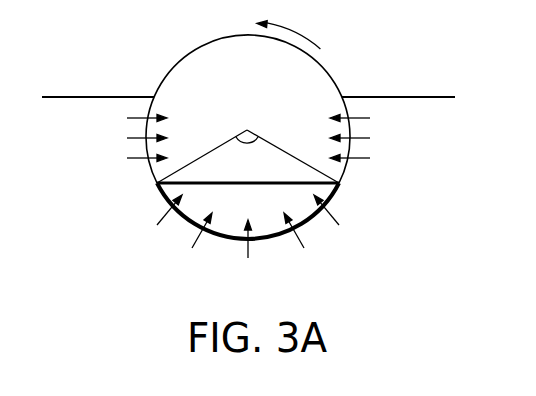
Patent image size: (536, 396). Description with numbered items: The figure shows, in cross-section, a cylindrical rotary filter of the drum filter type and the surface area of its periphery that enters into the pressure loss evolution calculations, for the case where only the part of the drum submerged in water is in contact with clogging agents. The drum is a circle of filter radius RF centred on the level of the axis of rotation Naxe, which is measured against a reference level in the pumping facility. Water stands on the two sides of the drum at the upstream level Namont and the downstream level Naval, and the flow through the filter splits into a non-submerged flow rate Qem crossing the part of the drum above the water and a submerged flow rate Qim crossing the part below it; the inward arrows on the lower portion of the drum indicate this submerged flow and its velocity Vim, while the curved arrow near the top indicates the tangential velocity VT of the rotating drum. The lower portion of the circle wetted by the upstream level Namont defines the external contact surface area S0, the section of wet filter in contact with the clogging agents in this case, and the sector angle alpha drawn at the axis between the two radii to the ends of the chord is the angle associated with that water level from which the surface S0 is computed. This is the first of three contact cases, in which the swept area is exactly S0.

The section of wet filter by N_amont S0 is at (337, 189).
The level of the axis of rotation of the filter Naxe is at (282, 140).
The filter radius RF is at (202, 152).
The sector angle associated with a level N alpha is at (247, 153).
The upstream level Namont is at (94, 77).
The downstream level Naval is at (398, 149).
The flow rate, non-submerged Qem is at (220, 138).
The flow rate, submerged Qim is at (248, 244).
The immersion velocity Vim is at (269, 248).
The tangential velocity VT is at (289, 28).